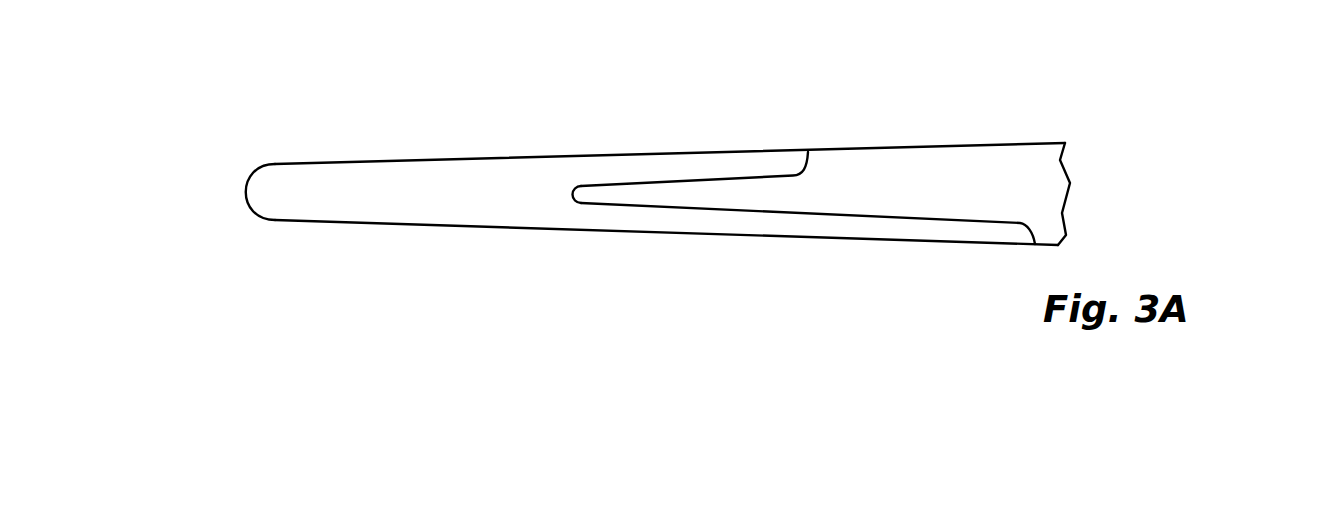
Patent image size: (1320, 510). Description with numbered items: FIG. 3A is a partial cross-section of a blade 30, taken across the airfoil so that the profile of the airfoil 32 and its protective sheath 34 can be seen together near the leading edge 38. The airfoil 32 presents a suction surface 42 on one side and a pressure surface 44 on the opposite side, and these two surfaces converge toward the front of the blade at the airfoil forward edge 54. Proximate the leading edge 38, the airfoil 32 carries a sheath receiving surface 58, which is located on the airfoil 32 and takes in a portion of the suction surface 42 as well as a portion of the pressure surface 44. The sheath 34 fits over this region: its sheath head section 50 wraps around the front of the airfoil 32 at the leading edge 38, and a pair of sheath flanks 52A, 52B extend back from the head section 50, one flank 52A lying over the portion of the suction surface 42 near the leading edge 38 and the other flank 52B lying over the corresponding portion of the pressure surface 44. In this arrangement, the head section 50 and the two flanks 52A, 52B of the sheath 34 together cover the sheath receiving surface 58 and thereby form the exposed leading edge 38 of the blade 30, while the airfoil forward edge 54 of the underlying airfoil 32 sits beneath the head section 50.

The blade 30 is at (755, 88).
The airfoil 32 is at (933, 114).
The sheath 34 is at (658, 175).
The leading edge 38 is at (252, 216).
The suction surface 42 is at (816, 151).
The pressure surface 44 is at (1042, 246).
The sheath head section 50 is at (353, 197).
The sheath flank 52A is at (618, 170).
The sheath flank 52B is at (611, 222).
The airfoil forward edge 54 is at (572, 193).
The sheath receiving surface 58 is at (728, 180).